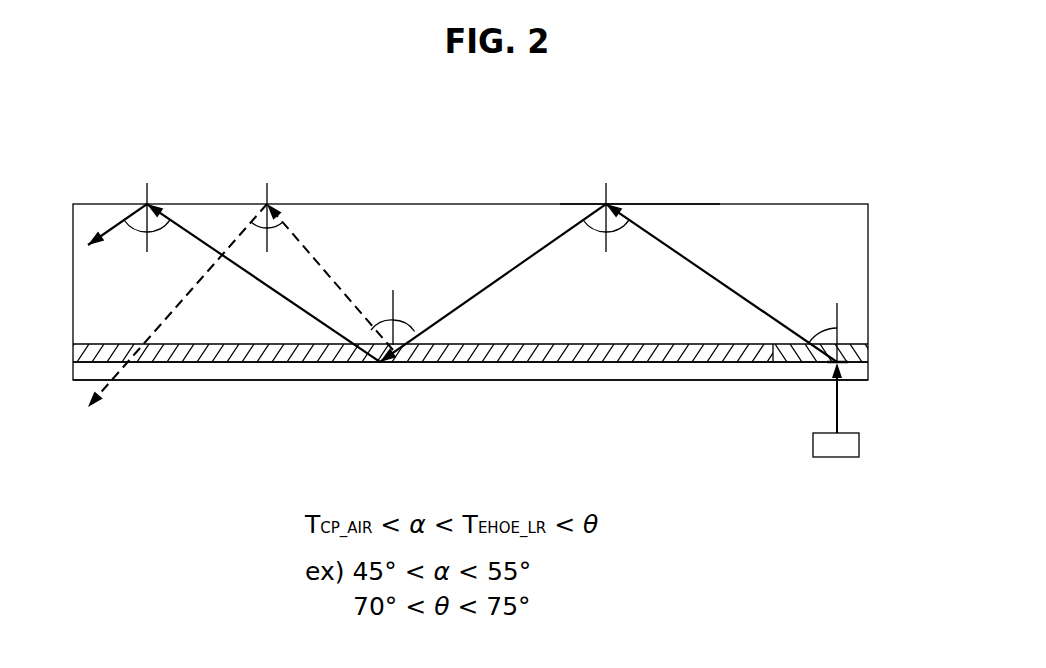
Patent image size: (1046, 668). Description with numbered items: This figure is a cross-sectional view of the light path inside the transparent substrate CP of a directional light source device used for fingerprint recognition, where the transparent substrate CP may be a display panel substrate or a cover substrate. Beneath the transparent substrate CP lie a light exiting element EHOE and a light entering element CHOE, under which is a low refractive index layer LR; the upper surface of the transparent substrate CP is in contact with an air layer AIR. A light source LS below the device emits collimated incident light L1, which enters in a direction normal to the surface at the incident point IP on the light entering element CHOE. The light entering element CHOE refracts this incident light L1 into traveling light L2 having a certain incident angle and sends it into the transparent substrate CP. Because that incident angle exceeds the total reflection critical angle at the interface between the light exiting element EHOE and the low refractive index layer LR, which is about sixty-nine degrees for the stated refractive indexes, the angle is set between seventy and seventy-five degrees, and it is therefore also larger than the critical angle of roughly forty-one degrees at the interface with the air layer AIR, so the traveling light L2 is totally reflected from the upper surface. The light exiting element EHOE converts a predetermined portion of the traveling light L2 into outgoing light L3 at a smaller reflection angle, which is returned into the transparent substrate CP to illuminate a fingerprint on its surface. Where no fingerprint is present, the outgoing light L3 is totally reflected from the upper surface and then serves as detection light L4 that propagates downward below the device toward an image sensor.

The transparent substrate CP is at (812, 220).
The low refractive index layer LR is at (575, 370).
The light exiting element EHOE is at (672, 358).
The light entering element CHOE is at (790, 358).
The air layer AIR is at (640, 185).
The light source LS is at (855, 447).
The incident light L1 is at (840, 403).
The incident point IP is at (843, 365).
The traveling light L2 is at (110, 224).
The outgoing light L3 is at (317, 256).
The detection light L4 is at (179, 306).